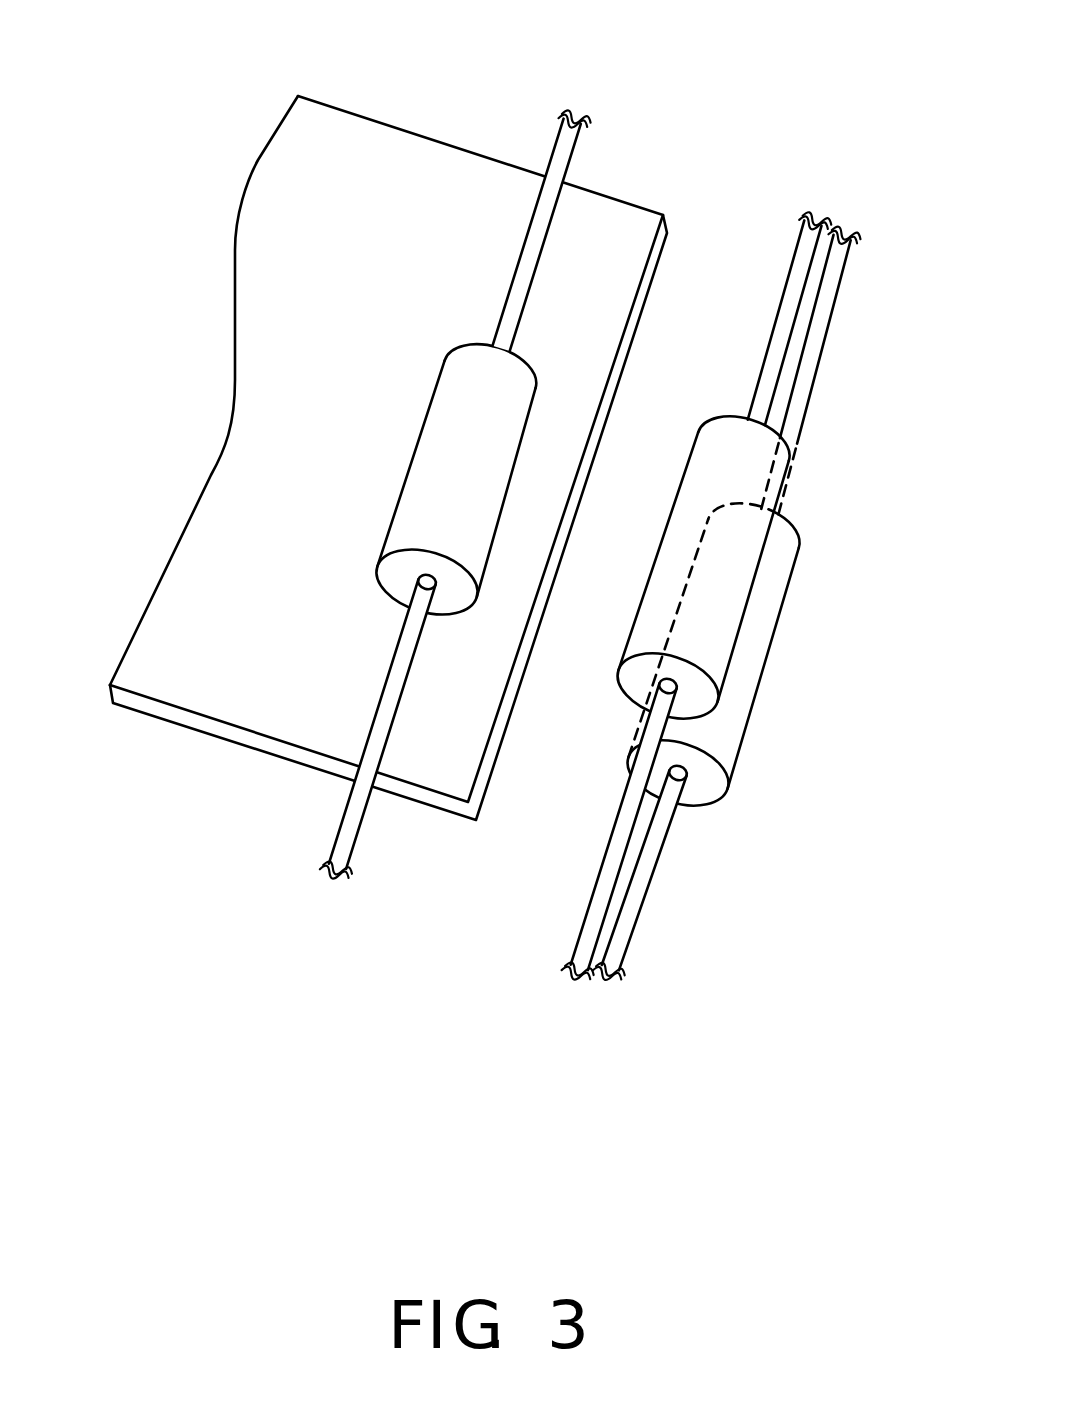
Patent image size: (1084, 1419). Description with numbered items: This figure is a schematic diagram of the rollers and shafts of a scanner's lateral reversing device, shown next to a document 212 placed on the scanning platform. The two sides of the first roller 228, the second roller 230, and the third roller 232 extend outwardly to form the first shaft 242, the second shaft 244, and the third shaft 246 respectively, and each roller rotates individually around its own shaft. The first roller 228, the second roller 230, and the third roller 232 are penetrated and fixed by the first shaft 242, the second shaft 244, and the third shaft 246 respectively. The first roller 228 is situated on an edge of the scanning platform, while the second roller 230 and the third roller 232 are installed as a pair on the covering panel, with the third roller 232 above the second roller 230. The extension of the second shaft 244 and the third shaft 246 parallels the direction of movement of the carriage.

The document 212 is at (360, 160).
The first roller 228 is at (478, 373).
The second roller 230 is at (722, 447).
The third roller 232 is at (762, 625).
The first shaft 242 is at (387, 708).
The second shaft 244 is at (610, 853).
The third shaft 246 is at (648, 868).